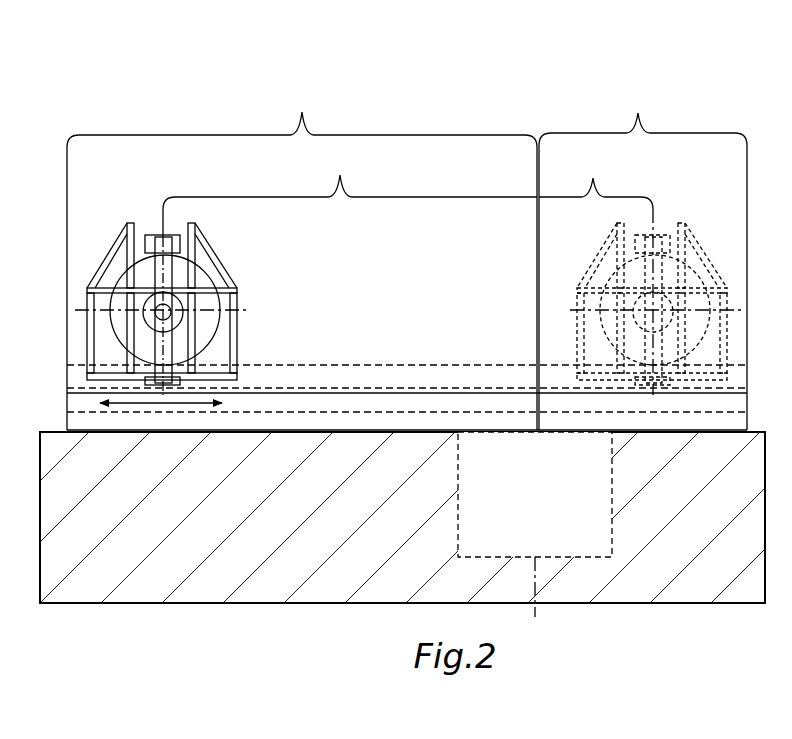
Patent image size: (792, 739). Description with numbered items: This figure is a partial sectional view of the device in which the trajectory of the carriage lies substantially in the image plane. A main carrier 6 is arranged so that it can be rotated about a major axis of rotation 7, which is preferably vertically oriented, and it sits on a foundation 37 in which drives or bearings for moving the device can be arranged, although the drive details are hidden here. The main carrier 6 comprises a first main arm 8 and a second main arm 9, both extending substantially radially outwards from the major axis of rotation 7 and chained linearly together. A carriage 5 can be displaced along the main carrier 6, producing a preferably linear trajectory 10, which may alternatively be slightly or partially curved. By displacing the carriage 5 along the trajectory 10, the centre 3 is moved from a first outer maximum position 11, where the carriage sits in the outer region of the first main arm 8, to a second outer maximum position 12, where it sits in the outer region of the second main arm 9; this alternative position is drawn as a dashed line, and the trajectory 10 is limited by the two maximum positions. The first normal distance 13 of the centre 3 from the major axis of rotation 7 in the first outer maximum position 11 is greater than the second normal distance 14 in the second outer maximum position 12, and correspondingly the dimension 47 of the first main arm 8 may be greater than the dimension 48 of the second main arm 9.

The centre 3 is at (207, 232).
The carriage 5 is at (135, 225).
The main carrier 6 is at (737, 328).
The major axis of rotation 7 is at (535, 523).
The first main arm 8 is at (120, 422).
The second main arm 9 is at (670, 420).
The trajectory 10 is at (192, 410).
The first outer maximum position 11 is at (163, 237).
The second outer maximum position 12 is at (654, 200).
The first normal distance 13 is at (350, 191).
The second normal distance 14 is at (596, 178).
The foundation 37 is at (346, 565).
The dimension of the first main arm 47 is at (302, 257).
The dimension of the second main arm 48 is at (643, 257).